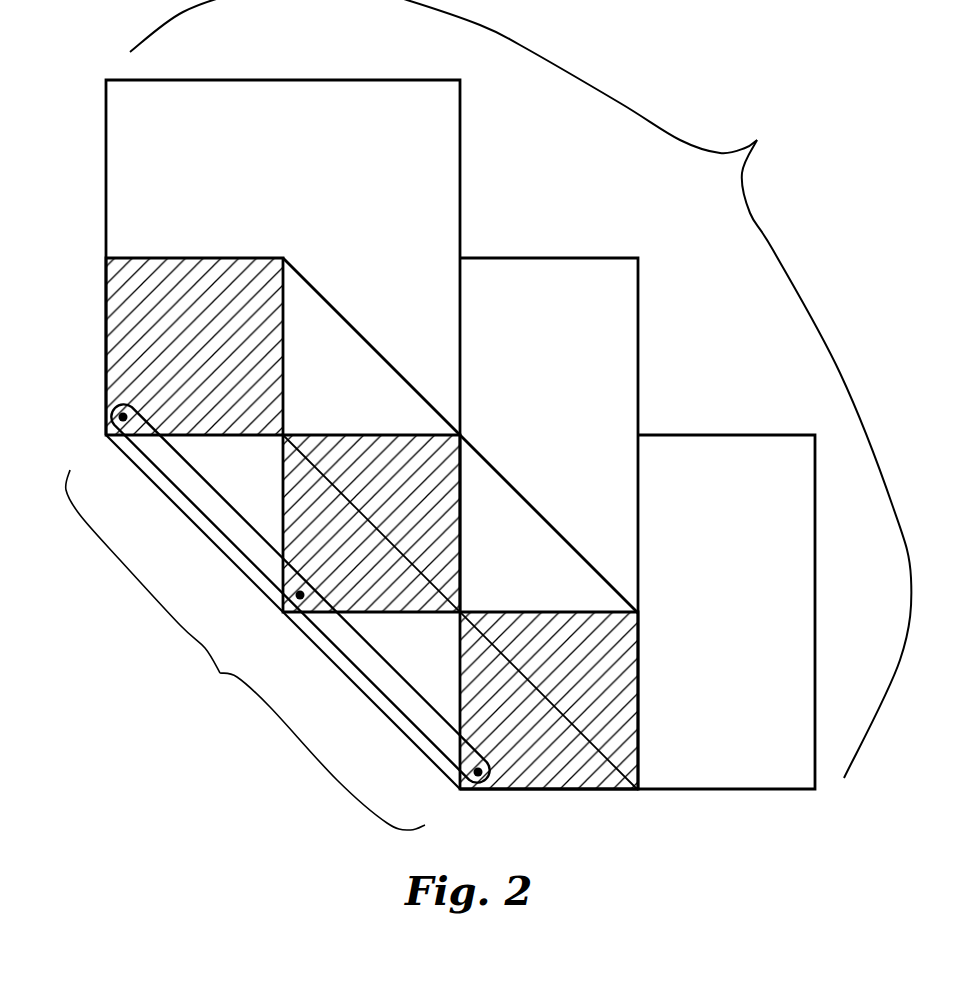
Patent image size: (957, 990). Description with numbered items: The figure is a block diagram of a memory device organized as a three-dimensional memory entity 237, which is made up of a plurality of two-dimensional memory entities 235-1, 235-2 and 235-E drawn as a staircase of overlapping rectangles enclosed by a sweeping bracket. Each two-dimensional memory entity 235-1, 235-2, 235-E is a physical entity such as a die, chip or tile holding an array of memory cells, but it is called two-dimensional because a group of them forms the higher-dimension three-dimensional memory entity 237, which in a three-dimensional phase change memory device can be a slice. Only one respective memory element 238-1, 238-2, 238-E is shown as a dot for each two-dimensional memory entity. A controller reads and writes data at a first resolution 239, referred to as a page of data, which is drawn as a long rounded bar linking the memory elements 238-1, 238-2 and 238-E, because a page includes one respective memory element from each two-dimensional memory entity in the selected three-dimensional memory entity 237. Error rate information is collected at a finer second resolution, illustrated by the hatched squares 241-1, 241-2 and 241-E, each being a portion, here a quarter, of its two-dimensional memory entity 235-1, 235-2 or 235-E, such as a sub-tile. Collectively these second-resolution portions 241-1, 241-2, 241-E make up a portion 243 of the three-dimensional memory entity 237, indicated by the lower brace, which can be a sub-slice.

The two-dimensional memory entity 235-1 is at (360, 93).
The two-dimensional memory entity 235-2 is at (537, 270).
The two-dimensional memory entity 235-E is at (715, 447).
The three-dimensional memory entity 237 is at (520, 389).
The memory element 238-1 is at (108, 405).
The memory element 238-2 is at (290, 590).
The memory element 238-E is at (465, 783).
The first resolution 239 is at (388, 702).
The second resolution 241-1 is at (221, 358).
The second resolution 241-2 is at (369, 563).
The second resolution 241-E is at (546, 742).
The portion of the three-dimensional memory entity 243 is at (245, 650).